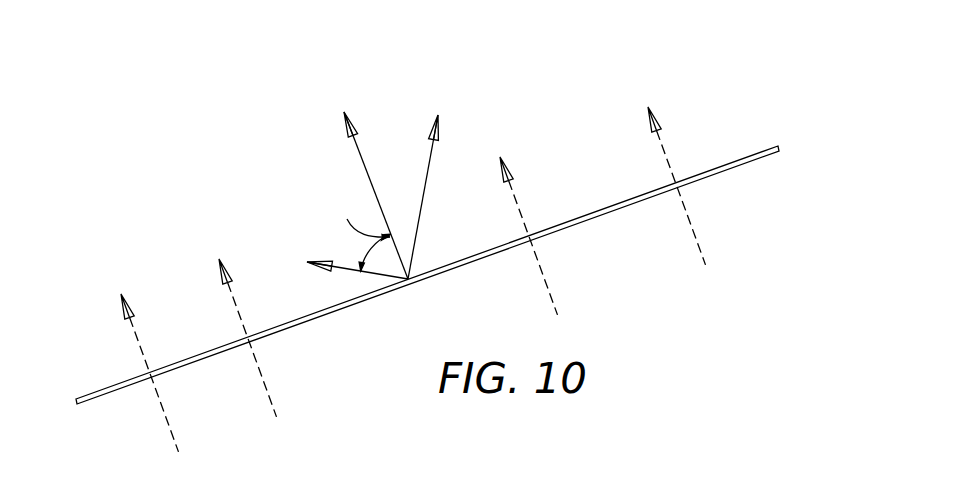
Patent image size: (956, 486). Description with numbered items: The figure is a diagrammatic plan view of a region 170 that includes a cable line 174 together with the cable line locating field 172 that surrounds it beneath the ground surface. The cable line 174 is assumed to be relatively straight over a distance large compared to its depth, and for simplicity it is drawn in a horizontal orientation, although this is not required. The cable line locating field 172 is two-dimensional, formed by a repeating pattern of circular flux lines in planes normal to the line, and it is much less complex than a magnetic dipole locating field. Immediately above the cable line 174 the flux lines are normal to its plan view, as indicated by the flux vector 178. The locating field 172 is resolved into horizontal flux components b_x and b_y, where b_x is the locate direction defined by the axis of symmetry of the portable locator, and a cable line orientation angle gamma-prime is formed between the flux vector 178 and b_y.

The region 170 is at (548, 92).
The cable line locating field 172 is at (691, 223).
The cable line 174 is at (743, 158).
The flux vector 178 is at (376, 195).